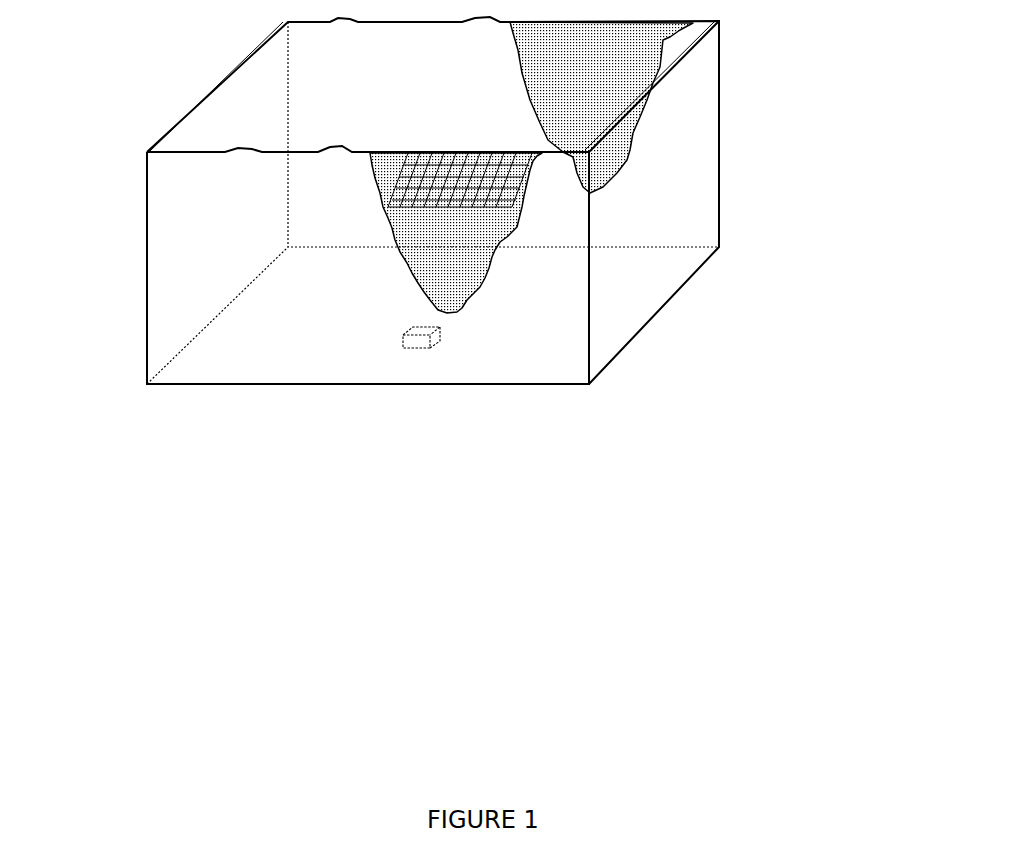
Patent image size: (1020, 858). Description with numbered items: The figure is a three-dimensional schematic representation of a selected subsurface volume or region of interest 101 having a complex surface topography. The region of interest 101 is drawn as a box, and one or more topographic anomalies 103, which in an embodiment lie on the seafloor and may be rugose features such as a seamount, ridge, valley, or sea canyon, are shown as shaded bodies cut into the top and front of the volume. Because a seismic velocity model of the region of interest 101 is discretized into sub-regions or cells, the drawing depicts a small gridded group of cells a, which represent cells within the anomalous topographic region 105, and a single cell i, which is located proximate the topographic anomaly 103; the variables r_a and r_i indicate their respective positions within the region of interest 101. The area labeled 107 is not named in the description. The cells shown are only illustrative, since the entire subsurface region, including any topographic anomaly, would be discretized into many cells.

The subsurface region of interest 101 is at (722, 60).
The topographic anomaly 103 is at (385, 214).
The anomalous topographic region 105 is at (447, 228).
The background region 107 is at (545, 228).
The cells in the anomalous topographic region a is at (402, 210).
The cell proximate the topographic anomaly i is at (423, 343).